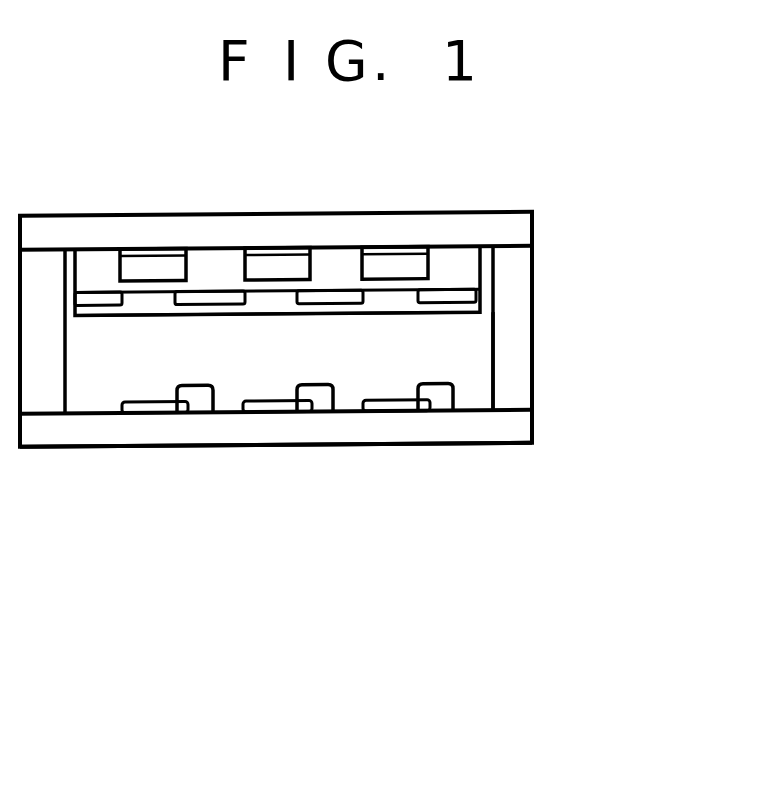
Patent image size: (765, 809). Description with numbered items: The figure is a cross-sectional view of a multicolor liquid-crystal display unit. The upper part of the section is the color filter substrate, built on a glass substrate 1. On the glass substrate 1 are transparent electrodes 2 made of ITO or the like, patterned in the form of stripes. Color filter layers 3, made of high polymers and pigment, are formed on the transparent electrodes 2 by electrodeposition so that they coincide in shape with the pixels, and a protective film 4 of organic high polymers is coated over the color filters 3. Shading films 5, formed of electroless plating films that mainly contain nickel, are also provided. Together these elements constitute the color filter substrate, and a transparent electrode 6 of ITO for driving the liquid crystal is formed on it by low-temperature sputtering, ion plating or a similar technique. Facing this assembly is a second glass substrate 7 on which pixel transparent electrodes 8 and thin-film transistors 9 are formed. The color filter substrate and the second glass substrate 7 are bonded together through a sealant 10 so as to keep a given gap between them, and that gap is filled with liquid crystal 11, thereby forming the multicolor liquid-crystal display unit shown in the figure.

The glass substrate 1 is at (456, 229).
The transparent electrodes 2 is at (397, 252).
The color filter layers 3 is at (412, 266).
The protective film 4 is at (465, 279).
The shading films 5 is at (468, 298).
The transparent electrode 6 is at (447, 308).
The second glass substrate 7 is at (335, 425).
The pixel transparent electrodes 8 is at (413, 413).
The thin-film transistors 9 is at (443, 397).
The sealant 10 is at (518, 383).
The liquid crystal 11 is at (457, 363).